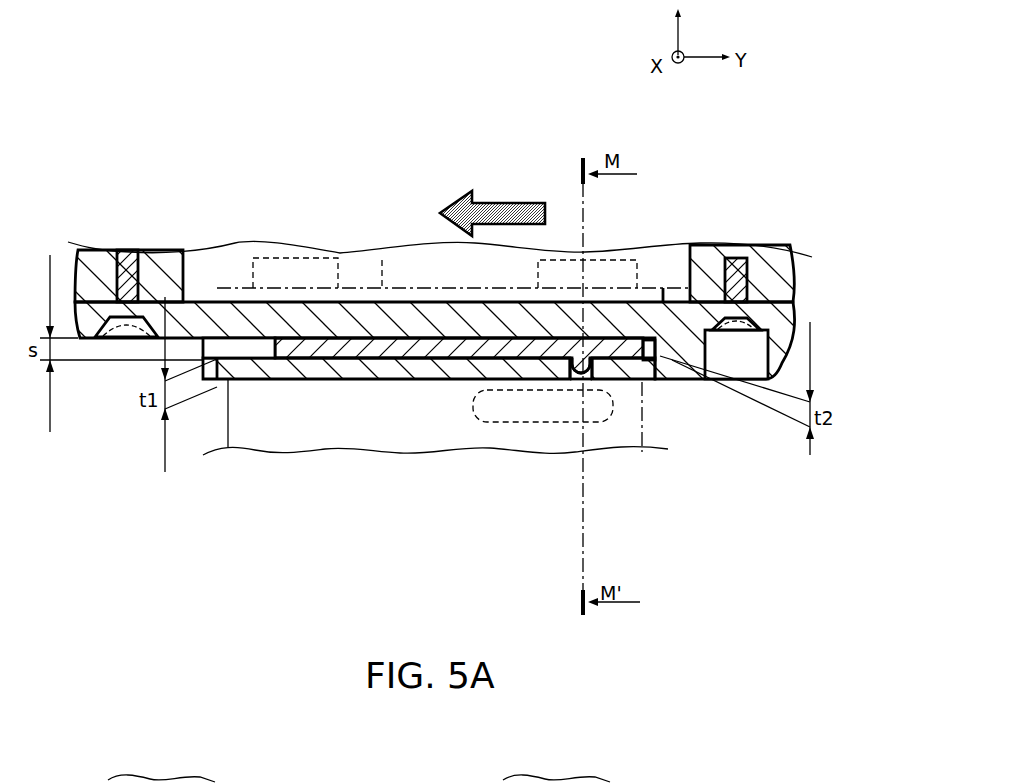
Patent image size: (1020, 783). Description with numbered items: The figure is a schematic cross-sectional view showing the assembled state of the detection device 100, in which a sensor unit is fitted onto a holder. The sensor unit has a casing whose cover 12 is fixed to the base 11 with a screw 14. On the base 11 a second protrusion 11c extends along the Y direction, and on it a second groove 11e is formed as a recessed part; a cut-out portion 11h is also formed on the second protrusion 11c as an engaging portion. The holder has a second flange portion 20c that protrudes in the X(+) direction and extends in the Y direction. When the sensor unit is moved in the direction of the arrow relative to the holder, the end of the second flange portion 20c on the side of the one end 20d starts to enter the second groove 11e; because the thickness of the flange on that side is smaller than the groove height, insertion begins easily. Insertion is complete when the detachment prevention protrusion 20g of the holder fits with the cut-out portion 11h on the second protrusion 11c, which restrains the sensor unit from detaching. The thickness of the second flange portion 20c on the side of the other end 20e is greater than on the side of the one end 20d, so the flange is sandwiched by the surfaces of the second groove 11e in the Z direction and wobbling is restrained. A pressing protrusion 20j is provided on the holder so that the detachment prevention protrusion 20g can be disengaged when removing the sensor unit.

The detection device 100 is at (439, 140).
The base 11 is at (296, 324).
The cover 12 is at (719, 260).
The screw 14 is at (750, 256).
The second groove 11e is at (192, 302).
The second protrusion 11c is at (318, 380).
The second flange portion 20c is at (413, 348).
The detachment prevention protrusion 20g is at (578, 372).
The cut-out portion 11h is at (596, 378).
The other end 20e is at (214, 429).
The pressing protrusion 20j is at (507, 421).
The one end 20d is at (648, 399).